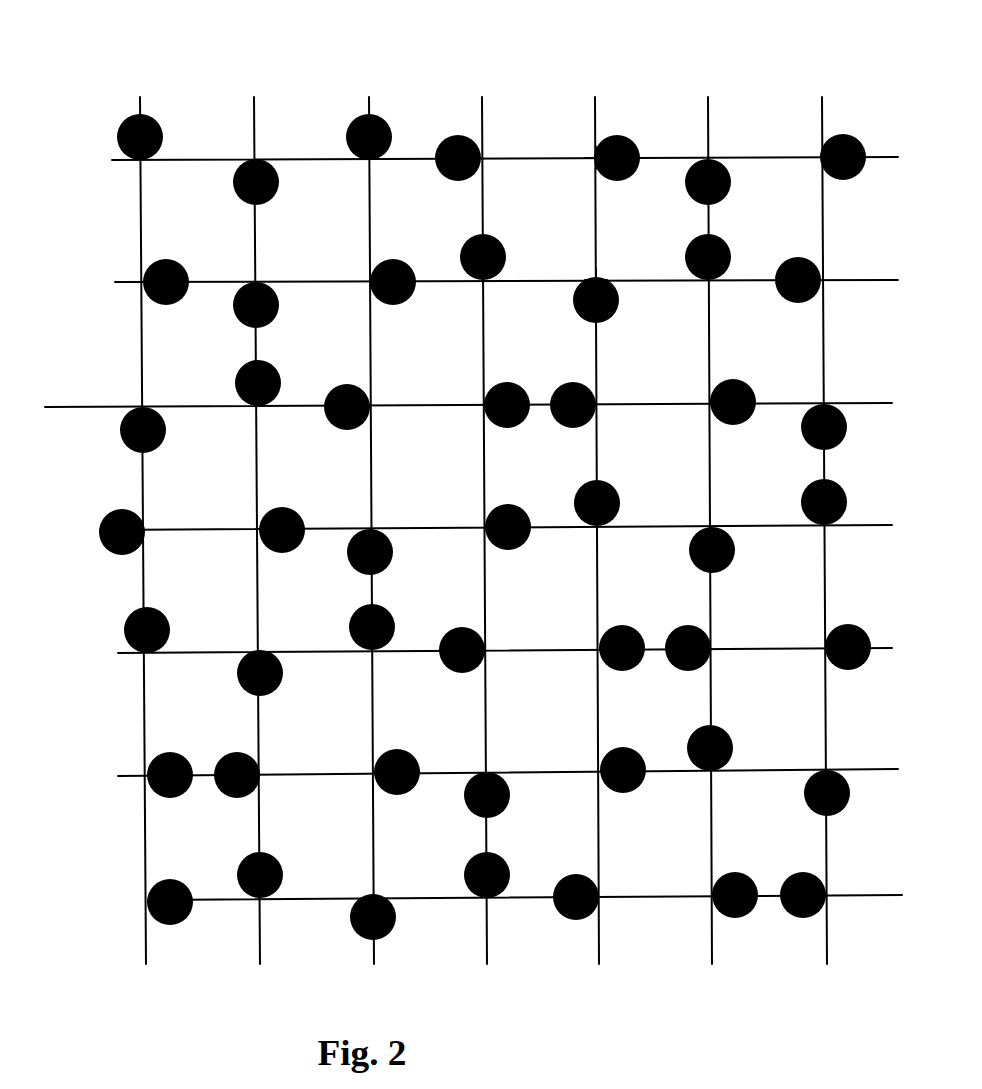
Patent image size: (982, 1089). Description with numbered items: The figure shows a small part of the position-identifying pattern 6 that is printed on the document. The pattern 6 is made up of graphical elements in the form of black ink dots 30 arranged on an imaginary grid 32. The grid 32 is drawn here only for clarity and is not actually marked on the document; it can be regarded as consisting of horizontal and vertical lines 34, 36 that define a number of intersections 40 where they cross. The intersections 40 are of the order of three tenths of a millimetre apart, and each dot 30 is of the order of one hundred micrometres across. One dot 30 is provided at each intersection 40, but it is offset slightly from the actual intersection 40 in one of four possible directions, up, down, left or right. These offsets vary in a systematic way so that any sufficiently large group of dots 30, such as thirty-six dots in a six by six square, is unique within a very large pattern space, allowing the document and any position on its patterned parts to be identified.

The position-identifying pattern 6 is at (473, 496).
The black ink dot 30 is at (483, 155).
The imaginary grid 32 is at (596, 117).
The horizontal line 34 is at (760, 155).
The vertical line 36 is at (710, 120).
The intersection 40 is at (590, 160).